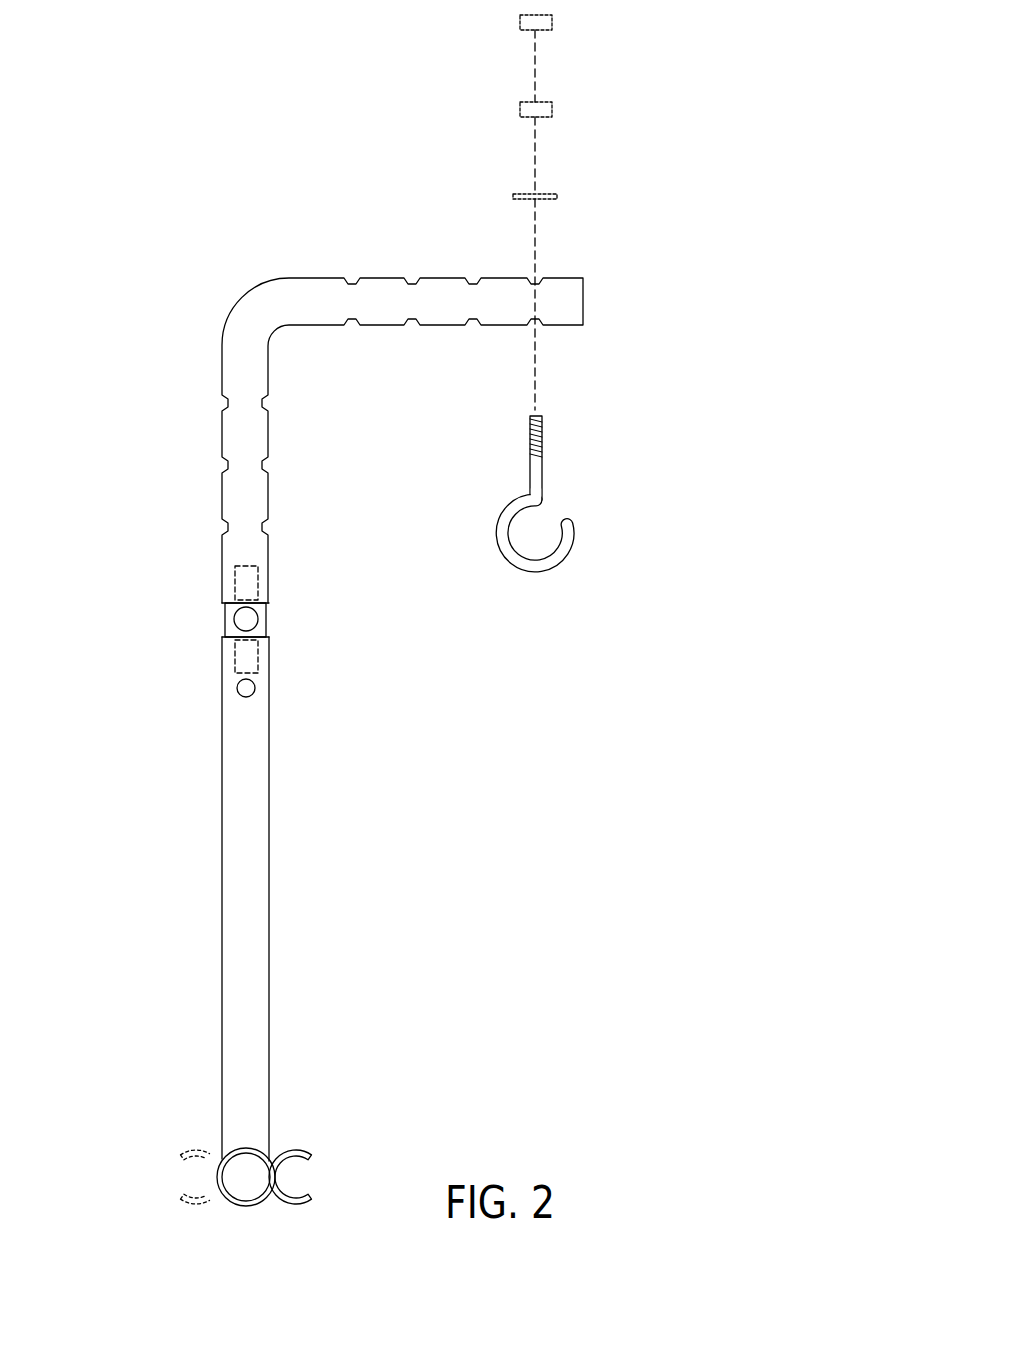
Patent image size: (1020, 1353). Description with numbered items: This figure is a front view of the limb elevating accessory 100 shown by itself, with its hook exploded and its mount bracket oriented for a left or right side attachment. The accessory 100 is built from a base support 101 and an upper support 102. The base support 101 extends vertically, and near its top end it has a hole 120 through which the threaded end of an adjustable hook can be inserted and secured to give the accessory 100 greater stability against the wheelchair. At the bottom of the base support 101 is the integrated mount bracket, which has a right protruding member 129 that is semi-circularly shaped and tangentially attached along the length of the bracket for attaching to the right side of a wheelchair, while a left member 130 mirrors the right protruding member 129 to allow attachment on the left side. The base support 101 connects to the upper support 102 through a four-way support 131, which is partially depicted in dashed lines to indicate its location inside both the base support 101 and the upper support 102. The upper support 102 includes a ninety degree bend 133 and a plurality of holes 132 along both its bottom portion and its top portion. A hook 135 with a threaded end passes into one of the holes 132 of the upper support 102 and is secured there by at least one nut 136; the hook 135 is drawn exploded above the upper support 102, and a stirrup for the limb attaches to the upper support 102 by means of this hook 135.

The limb elevating accessory 100 is at (672, 310).
The base support 101 is at (270, 872).
The upper support 102 is at (233, 318).
The hole 120 is at (237, 690).
The right protruding member 129 is at (298, 1148).
The left member 130 is at (243, 1207).
The 4-way support 131 is at (270, 617).
The holes 132 is at (547, 251).
The 90 degree bend 133 is at (278, 337).
The hook 135 is at (568, 553).
The nut 136 is at (597, 15).